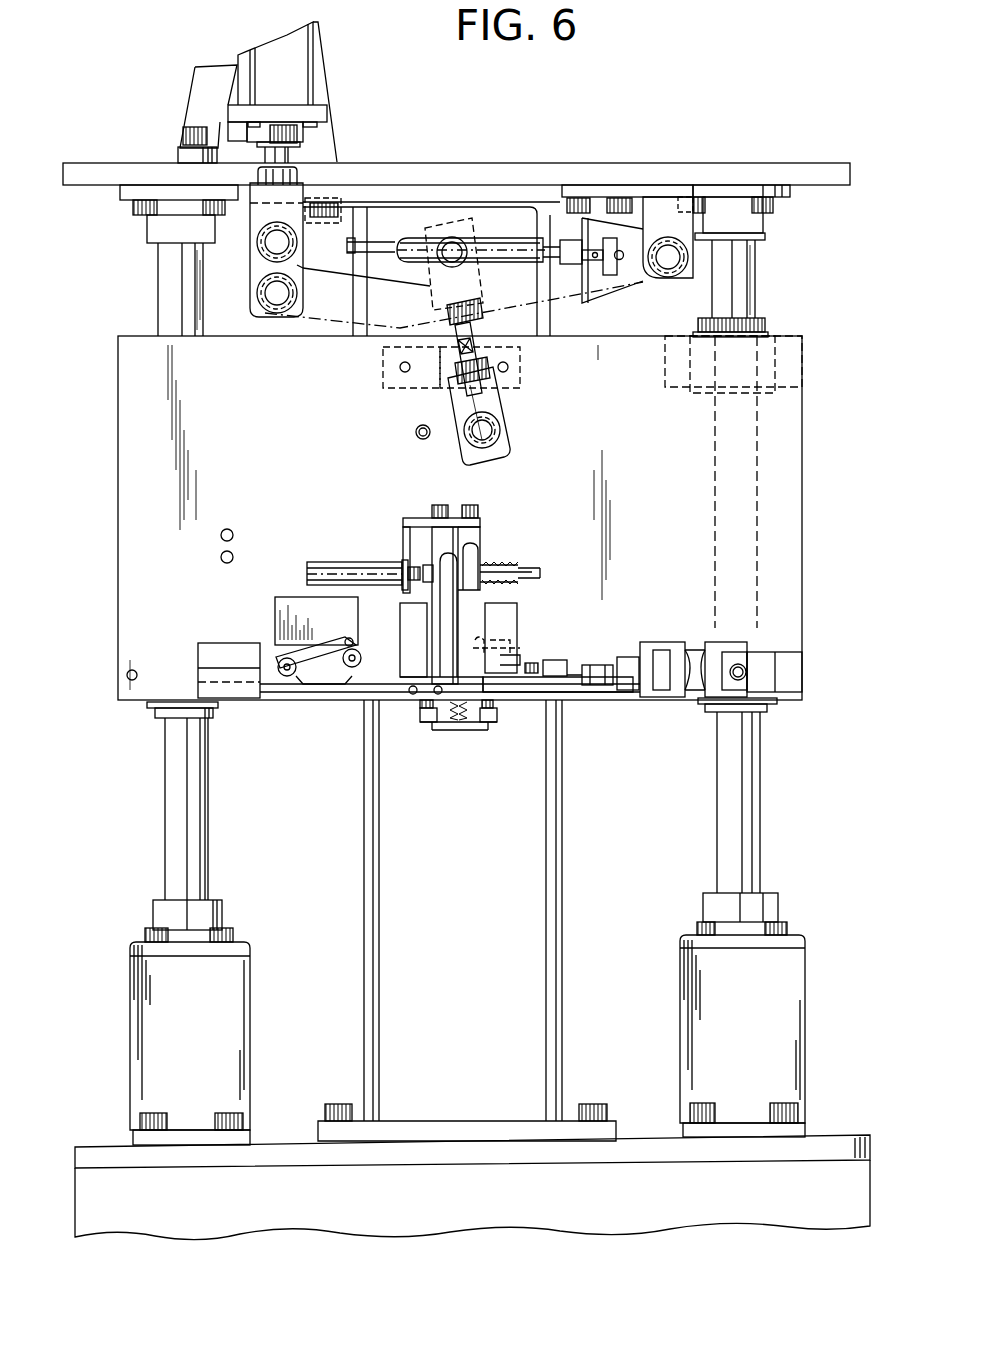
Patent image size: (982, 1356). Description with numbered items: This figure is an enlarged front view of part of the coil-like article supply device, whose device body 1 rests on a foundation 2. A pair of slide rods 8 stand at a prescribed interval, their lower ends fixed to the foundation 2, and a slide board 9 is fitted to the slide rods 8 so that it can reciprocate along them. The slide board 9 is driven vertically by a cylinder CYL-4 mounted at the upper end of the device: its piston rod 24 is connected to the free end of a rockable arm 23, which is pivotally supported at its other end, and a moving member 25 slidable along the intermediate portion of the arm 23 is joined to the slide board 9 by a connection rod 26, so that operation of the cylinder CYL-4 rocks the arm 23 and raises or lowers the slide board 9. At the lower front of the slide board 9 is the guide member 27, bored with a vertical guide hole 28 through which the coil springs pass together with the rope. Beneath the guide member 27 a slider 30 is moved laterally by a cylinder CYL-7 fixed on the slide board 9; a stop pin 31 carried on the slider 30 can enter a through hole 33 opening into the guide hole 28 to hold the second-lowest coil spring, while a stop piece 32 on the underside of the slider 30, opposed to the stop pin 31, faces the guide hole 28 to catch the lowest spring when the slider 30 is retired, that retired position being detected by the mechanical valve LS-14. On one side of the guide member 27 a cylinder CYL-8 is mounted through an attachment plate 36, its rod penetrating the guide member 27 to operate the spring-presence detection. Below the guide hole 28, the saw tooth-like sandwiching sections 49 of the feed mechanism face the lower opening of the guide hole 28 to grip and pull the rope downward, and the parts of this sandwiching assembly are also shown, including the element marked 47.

The device body 1 is at (853, 1188).
The foundation 2 is at (827, 1138).
The slide rods 8 is at (200, 777).
The slide board 9 is at (782, 606).
The rockable arm 23 is at (450, 218).
The piston rod 24 is at (305, 77).
The moving member 25 is at (470, 229).
The connection rod 26 is at (475, 336).
The guide member 27 is at (470, 598).
The guide hole 28 is at (440, 598).
The slider 30 is at (567, 682).
The stop pin 31 is at (517, 648).
The stop piece 32 is at (433, 730).
The through hole 33 is at (510, 640).
The attachment plate 36 is at (414, 520).
The spring 47 is at (455, 728).
The sandwiching sections 49 is at (482, 730).
The cylinder CYL-4 is at (302, 70).
The cylinder CYL-7 is at (672, 692).
The cylinder CYL-8 is at (378, 566).
The mechanical valve LS-14 is at (275, 628).